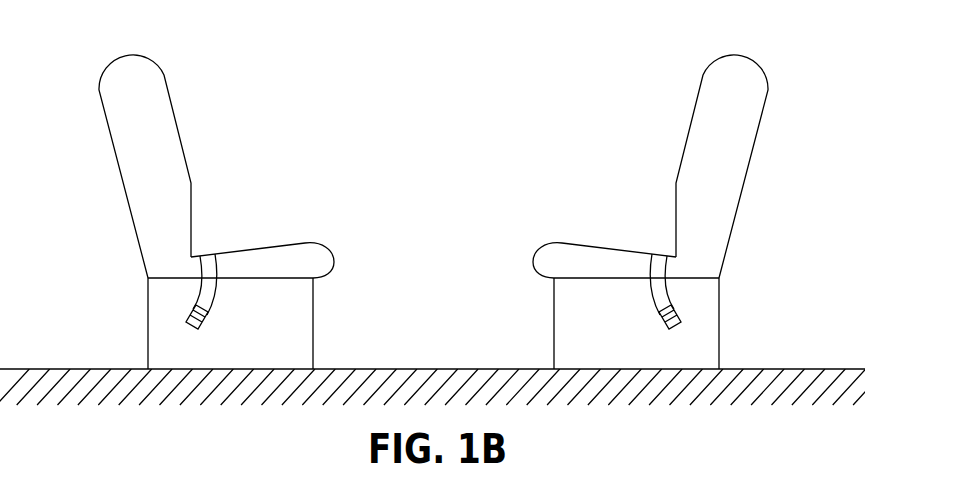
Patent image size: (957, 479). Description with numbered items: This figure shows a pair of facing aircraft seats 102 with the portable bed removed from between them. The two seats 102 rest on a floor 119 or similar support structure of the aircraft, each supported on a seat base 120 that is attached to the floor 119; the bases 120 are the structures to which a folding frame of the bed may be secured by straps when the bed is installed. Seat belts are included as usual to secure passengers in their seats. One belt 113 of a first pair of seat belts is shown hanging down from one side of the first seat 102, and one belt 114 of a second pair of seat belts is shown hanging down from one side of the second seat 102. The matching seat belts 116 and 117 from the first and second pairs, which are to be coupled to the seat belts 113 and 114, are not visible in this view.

The facing seats 102 is at (187, 66).
The first pair of seat belts 113 is at (676, 312).
The second pair of seat belts 114 is at (192, 312).
The matching seat belt 116 is at (268, 245).
The matching seat belt 117 is at (608, 245).
The floor 119 is at (835, 369).
The seat bases 120 is at (148, 343).